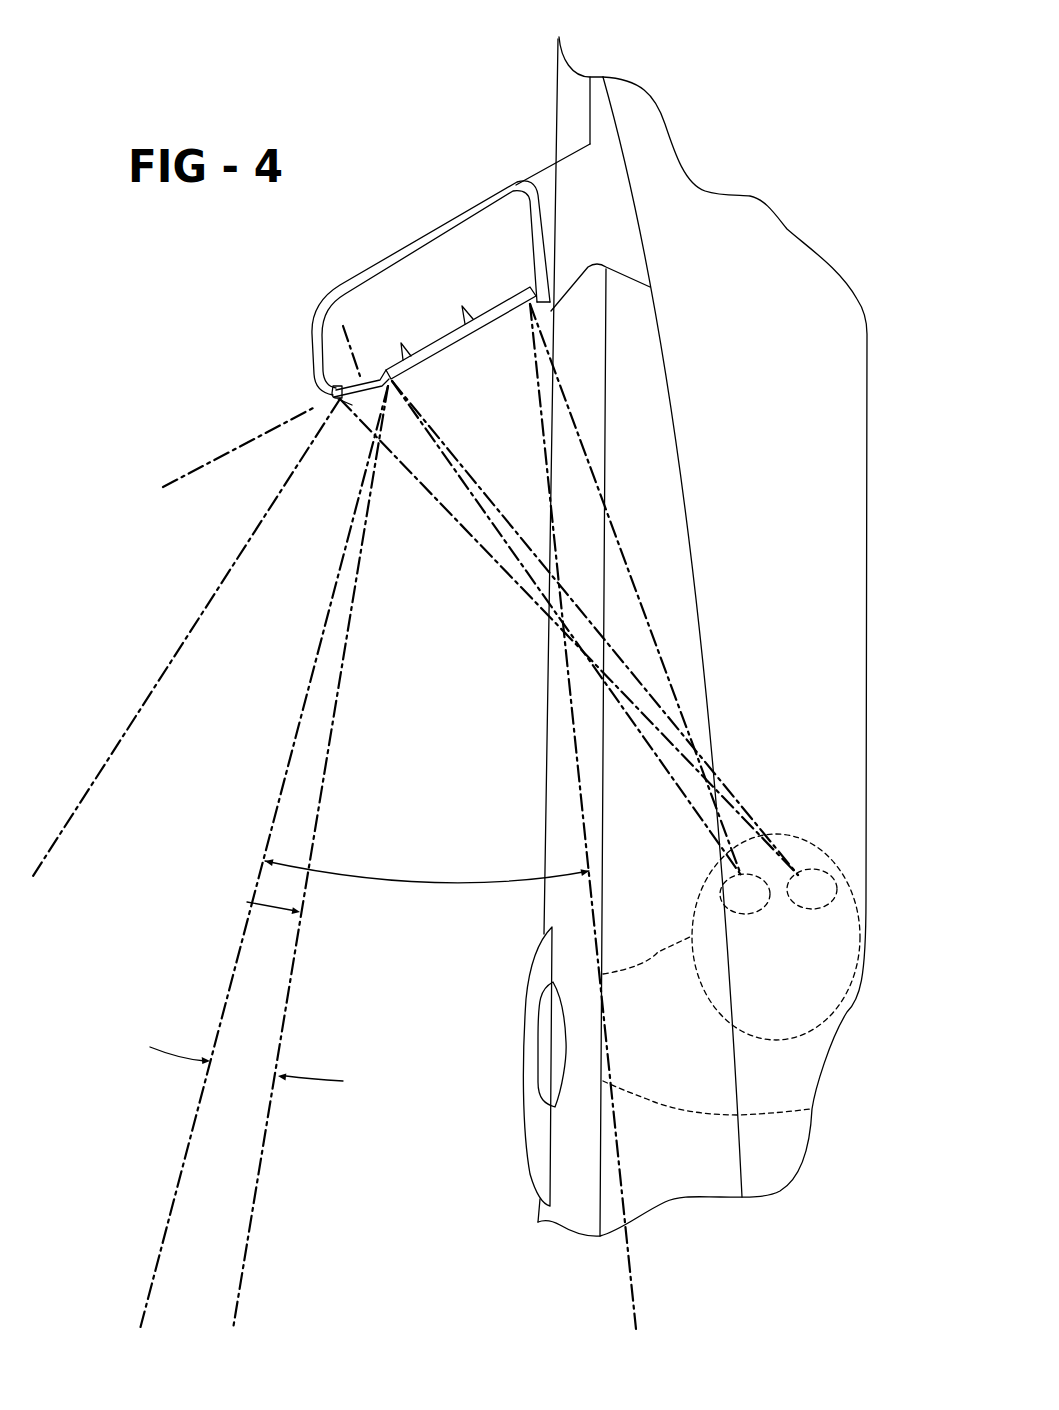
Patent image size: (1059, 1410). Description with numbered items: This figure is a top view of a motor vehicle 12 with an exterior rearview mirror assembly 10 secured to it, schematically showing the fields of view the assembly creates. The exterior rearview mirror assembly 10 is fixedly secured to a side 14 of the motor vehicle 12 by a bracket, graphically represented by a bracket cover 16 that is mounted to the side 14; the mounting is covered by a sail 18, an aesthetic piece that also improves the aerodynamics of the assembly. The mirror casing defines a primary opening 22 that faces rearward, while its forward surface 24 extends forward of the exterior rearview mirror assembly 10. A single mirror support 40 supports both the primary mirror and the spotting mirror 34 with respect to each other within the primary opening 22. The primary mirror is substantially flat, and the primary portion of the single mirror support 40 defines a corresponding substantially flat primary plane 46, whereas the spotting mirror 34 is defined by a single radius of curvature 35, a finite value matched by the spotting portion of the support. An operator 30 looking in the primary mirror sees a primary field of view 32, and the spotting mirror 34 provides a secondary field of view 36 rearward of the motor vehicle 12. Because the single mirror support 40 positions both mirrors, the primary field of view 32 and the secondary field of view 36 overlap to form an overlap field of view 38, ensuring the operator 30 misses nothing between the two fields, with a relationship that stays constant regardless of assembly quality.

The exterior rearview mirror assembly 10 is at (349, 314).
The motor vehicle 12 is at (750, 197).
The side 14 is at (558, 70).
The bracket cover 16 is at (535, 175).
The sail 18 is at (597, 125).
The primary opening 22 is at (333, 387).
The forward surface 24 is at (427, 232).
The operator 30 is at (658, 953).
The primary field of view 32 is at (383, 883).
The spotting mirror 34 is at (353, 407).
The single radius of curvature 35 is at (355, 350).
The secondary field of view 36 is at (68, 831).
The overlap field of view 38 is at (223, 1122).
The single mirror support 40 is at (435, 341).
The primary plane 46 is at (200, 467).